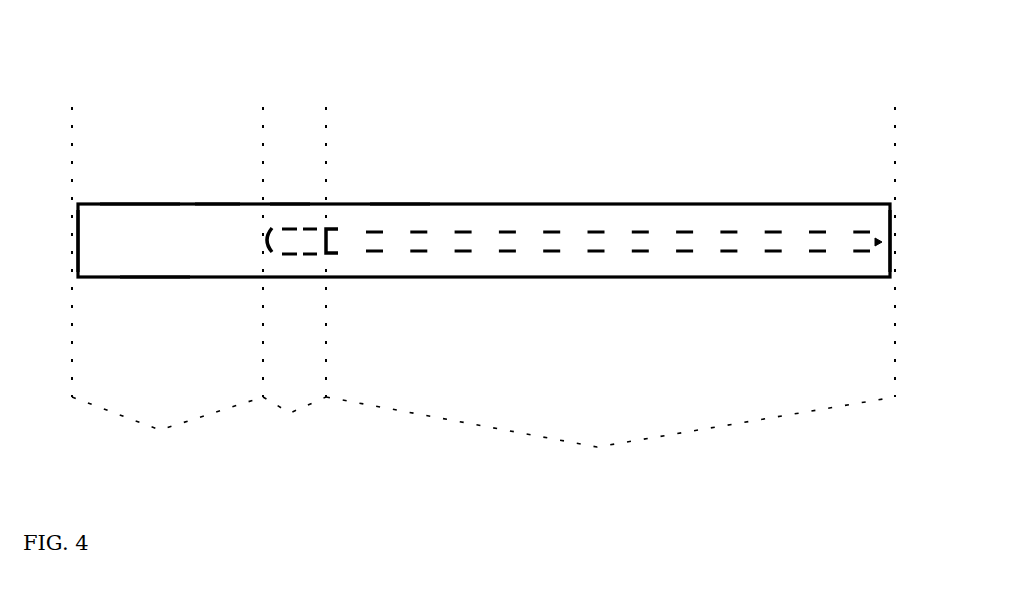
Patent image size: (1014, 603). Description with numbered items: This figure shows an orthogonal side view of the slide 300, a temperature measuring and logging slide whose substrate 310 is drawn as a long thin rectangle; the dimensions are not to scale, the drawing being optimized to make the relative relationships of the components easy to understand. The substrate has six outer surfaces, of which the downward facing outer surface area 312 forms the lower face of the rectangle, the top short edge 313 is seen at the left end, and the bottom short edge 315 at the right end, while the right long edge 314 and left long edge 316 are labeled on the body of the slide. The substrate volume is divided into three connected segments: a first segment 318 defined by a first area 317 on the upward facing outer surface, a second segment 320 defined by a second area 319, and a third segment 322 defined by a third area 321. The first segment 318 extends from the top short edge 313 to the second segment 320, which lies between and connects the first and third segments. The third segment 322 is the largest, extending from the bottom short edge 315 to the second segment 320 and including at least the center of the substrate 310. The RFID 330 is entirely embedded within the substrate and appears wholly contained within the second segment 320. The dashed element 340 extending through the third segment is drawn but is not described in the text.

The slide 300 is at (215, 90).
The substrate 310 is at (162, 186).
The downward facing outer surface area 312 is at (152, 279).
The top short edge 313 is at (66, 242).
The right long edge 314 is at (147, 239).
The bottom short edge 315 is at (895, 236).
The left long edge 316 is at (197, 254).
The first area 317 is at (212, 203).
The first segment 318 is at (167, 286).
The second area 319 is at (290, 203).
The second segment 320 is at (294, 273).
The third area 321 is at (400, 203).
The third segment 322 is at (610, 291).
The RFID 330 is at (292, 252).
The dashed channel 340 is at (462, 248).